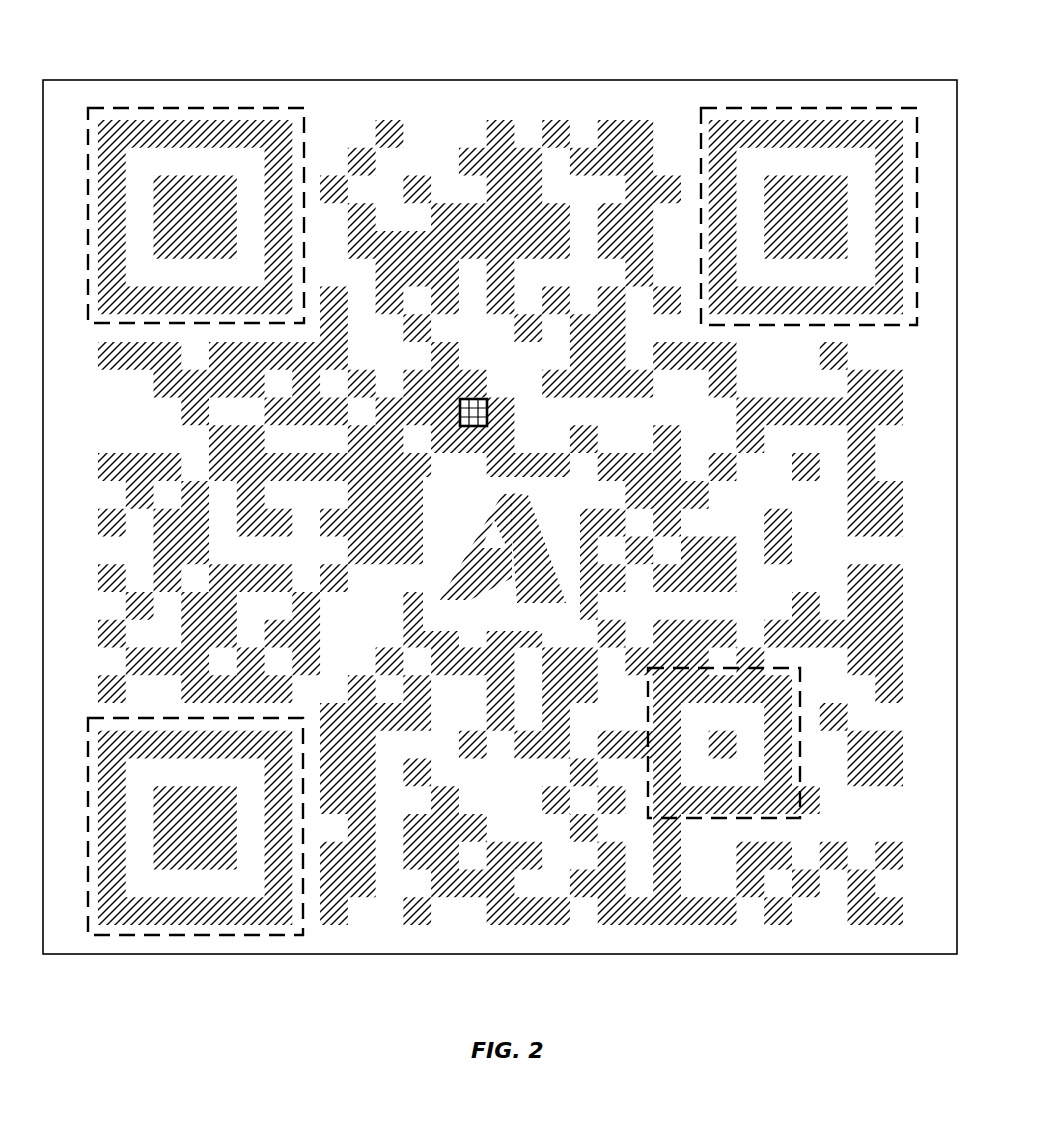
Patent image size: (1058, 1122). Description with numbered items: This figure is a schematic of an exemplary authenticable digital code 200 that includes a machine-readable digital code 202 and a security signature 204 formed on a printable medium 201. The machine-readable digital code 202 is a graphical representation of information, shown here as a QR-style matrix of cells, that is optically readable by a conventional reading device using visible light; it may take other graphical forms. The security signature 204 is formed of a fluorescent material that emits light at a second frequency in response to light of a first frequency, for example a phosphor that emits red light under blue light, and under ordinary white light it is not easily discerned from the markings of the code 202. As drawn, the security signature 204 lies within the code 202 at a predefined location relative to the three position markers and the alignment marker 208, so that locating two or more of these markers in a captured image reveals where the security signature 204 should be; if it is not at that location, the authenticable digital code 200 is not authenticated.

The authenticable digital code 200 is at (140, 64).
The printable medium 201 is at (388, 88).
The machine-readable digital code 202 is at (853, 98).
The security signature 204 is at (479, 398).
The alignment marker 208 is at (715, 818).